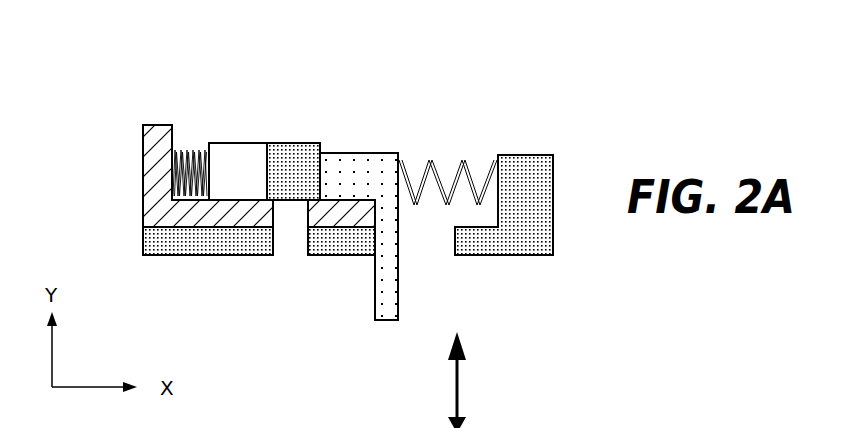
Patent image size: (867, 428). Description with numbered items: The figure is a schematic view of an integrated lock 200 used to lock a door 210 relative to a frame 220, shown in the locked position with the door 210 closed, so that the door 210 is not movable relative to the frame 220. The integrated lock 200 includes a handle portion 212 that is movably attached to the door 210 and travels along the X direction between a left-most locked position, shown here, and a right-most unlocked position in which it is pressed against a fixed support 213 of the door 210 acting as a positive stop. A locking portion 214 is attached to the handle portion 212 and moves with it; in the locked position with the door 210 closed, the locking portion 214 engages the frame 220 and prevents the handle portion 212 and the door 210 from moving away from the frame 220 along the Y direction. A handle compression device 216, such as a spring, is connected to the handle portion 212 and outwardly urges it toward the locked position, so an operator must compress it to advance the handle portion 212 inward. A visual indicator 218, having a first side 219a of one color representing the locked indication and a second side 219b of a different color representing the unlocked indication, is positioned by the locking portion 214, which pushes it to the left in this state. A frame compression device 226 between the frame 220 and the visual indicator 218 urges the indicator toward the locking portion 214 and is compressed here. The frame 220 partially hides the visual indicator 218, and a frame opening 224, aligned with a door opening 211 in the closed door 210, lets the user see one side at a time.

The integrated lock 200 is at (580, 122).
The door 210 is at (117, 239).
The door opening 211 is at (285, 242).
The handle portion 212 is at (388, 300).
The fixed support 213 is at (553, 248).
The locking portion 214 is at (350, 173).
The handle compression device 216 is at (463, 158).
The visual indicator 218 is at (263, 108).
The first side 219a is at (293, 145).
The second side 219b is at (237, 163).
The frame 220 is at (118, 191).
The frame opening 224 is at (294, 218).
The frame compression device 226 is at (198, 148).